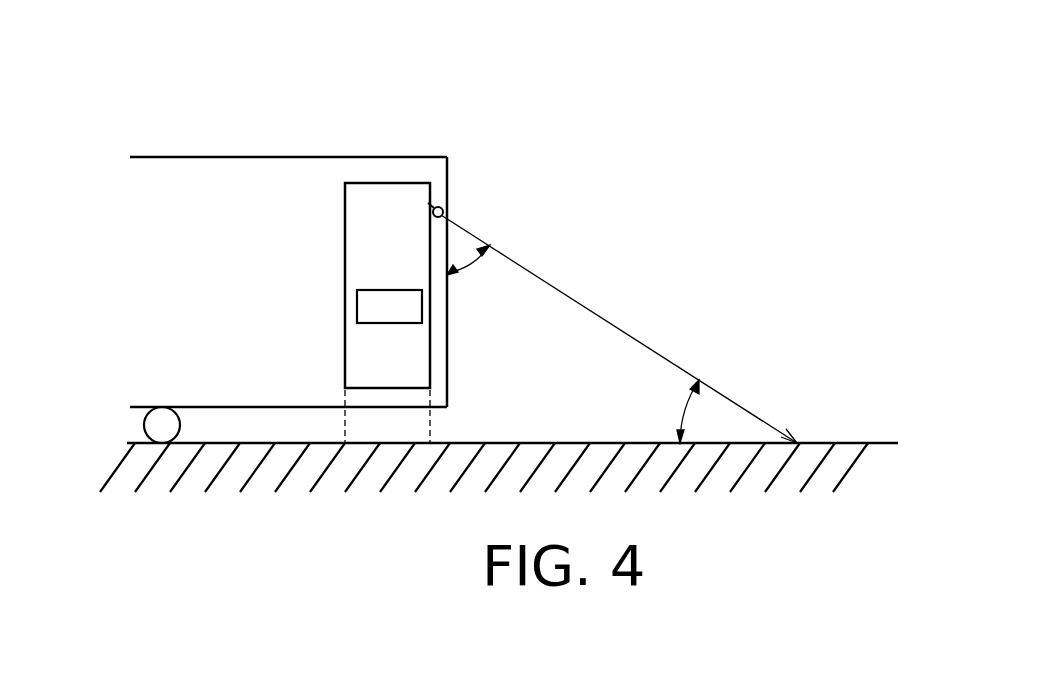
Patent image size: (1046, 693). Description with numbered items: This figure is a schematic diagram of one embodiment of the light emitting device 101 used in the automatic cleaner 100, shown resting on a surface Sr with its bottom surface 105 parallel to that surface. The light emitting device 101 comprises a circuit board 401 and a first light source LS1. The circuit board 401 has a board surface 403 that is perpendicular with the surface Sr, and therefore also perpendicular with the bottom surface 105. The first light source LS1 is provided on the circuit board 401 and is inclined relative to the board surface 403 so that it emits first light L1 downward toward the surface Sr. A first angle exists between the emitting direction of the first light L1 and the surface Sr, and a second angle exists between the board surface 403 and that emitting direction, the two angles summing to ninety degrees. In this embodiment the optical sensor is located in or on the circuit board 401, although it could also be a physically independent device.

The automatic cleaner 100 is at (418, 140).
The light emitting device 101 is at (526, 144).
The bottom surface 105 is at (447, 410).
The circuit board 401 is at (413, 190).
The board surface 403 is at (430, 309).
The first light source LS1 is at (442, 209).
The first light L1 is at (619, 329).
The surface Sr is at (852, 448).